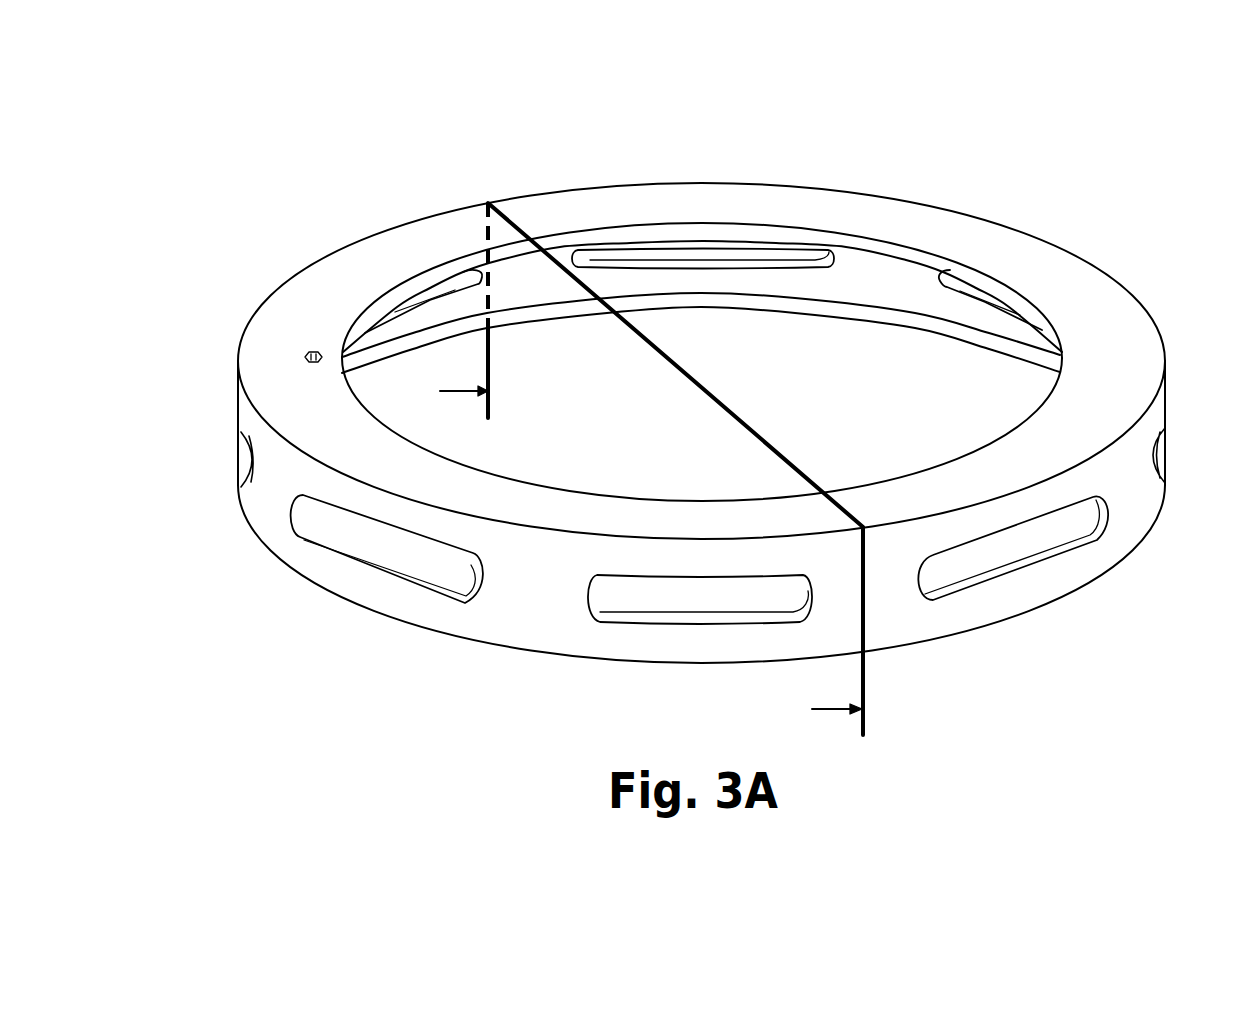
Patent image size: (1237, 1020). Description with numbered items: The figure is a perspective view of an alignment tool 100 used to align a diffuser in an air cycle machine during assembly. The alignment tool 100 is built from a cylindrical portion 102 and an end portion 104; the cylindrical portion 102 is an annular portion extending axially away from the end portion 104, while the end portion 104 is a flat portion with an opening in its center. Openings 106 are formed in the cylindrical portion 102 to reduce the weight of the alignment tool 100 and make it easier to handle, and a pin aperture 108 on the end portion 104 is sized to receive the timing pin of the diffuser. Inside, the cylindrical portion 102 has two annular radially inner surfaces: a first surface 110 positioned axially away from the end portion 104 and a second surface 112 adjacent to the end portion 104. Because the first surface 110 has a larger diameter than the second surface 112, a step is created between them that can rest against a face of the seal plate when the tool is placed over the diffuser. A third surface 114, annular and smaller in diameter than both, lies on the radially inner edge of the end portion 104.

The alignment tool 100 is at (1033, 156).
The cylindrical portion 102 is at (1133, 500).
The end portion 104 is at (907, 225).
The openings 106 is at (703, 265).
The pin aperture 108 is at (312, 353).
The first surface 110 is at (557, 311).
The second surface 112 is at (770, 282).
The third surface 114 is at (861, 247).